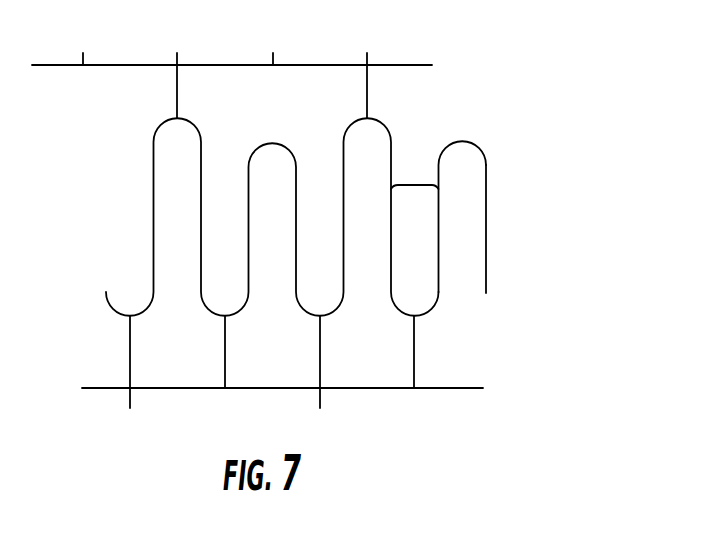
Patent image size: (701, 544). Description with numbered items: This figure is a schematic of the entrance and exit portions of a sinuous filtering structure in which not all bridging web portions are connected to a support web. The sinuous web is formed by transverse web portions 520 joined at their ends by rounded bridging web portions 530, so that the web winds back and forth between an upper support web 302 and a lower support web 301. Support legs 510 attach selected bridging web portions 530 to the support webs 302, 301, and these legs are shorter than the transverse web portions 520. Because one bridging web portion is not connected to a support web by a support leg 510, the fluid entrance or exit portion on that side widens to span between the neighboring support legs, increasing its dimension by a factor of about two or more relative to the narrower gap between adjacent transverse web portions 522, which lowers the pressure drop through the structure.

The support web 302 is at (412, 63).
The support web 301 is at (465, 388).
The support leg 510 is at (414, 360).
The gap between adjacent transverse web portions 522 is at (414, 183).
The bridging web portion 530 is at (468, 141).
The transverse web portion 520 is at (486, 240).